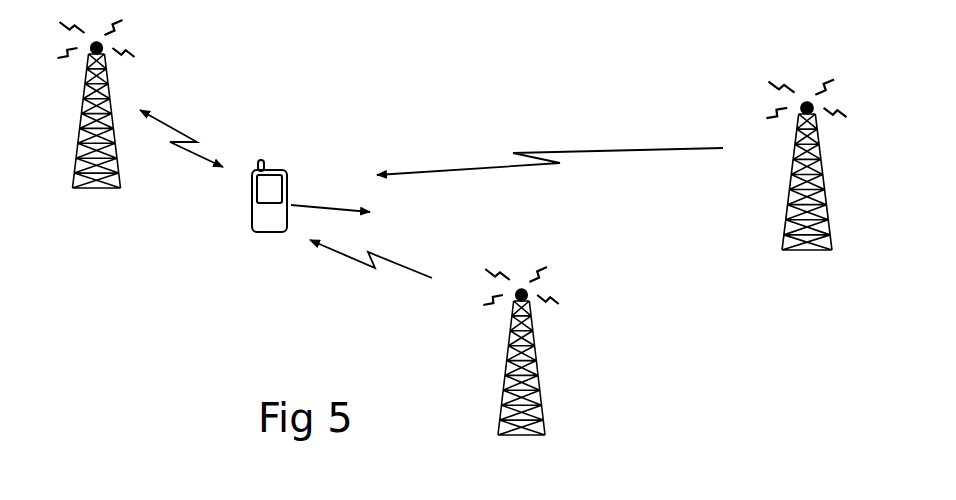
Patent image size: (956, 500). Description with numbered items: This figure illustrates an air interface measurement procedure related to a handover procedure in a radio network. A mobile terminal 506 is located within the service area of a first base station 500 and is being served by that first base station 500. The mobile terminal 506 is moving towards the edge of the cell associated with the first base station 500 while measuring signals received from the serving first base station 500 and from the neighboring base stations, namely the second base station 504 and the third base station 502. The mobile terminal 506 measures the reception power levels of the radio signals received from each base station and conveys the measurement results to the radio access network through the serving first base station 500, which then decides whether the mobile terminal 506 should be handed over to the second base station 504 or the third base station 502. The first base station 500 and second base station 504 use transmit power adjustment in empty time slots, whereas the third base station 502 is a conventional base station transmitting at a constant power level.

The first base station 500 is at (92, 186).
The third base station 502 is at (802, 248).
The second base station 504 is at (518, 433).
The mobile terminal 506 is at (270, 233).